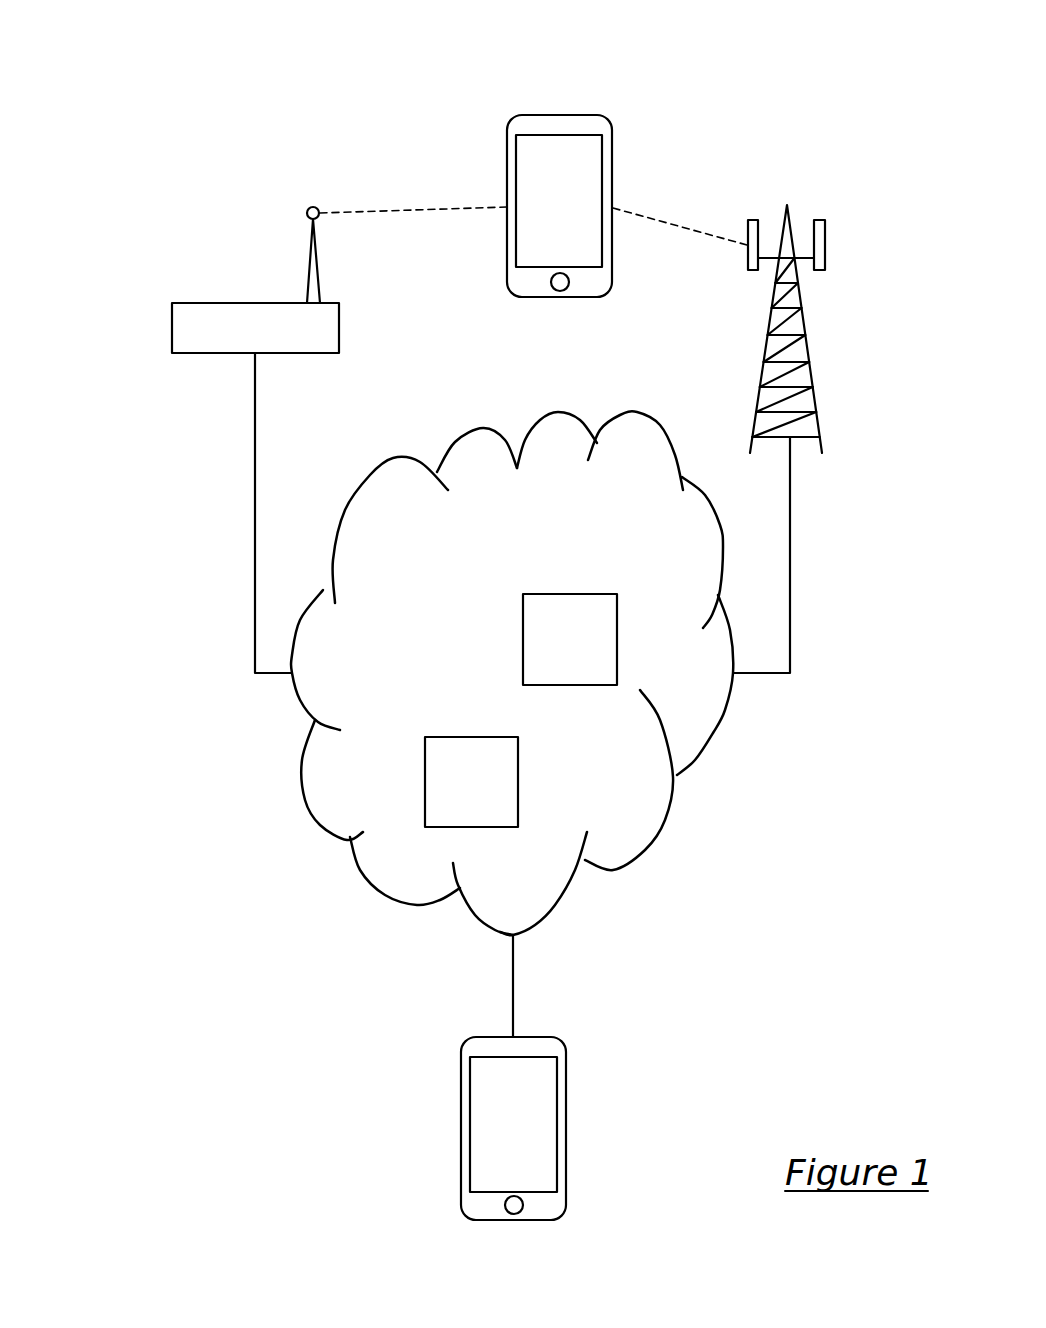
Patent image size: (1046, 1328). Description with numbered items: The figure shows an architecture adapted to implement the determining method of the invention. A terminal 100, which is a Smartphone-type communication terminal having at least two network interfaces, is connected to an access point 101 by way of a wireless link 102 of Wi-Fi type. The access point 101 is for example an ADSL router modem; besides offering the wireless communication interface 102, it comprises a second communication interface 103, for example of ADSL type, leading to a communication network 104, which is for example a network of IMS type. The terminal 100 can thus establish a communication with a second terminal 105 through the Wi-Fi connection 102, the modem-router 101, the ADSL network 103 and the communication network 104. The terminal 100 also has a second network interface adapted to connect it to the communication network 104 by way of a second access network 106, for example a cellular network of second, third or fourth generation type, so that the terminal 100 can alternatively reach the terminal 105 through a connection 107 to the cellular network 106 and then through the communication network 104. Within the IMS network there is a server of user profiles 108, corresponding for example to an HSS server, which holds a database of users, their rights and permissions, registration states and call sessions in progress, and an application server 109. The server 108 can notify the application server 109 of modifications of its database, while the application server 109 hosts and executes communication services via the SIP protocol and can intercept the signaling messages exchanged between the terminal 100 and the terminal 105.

The terminal 100 is at (507, 130).
The access point 101 is at (175, 335).
The wireless link 102 is at (377, 212).
The second communication interface 103 is at (256, 487).
The communication network 104 is at (483, 428).
The second terminal 105 is at (461, 1138).
The second access network 106 is at (828, 258).
The connection 107 is at (705, 232).
The server of user profiles 108 is at (523, 635).
The application server 109 is at (473, 737).